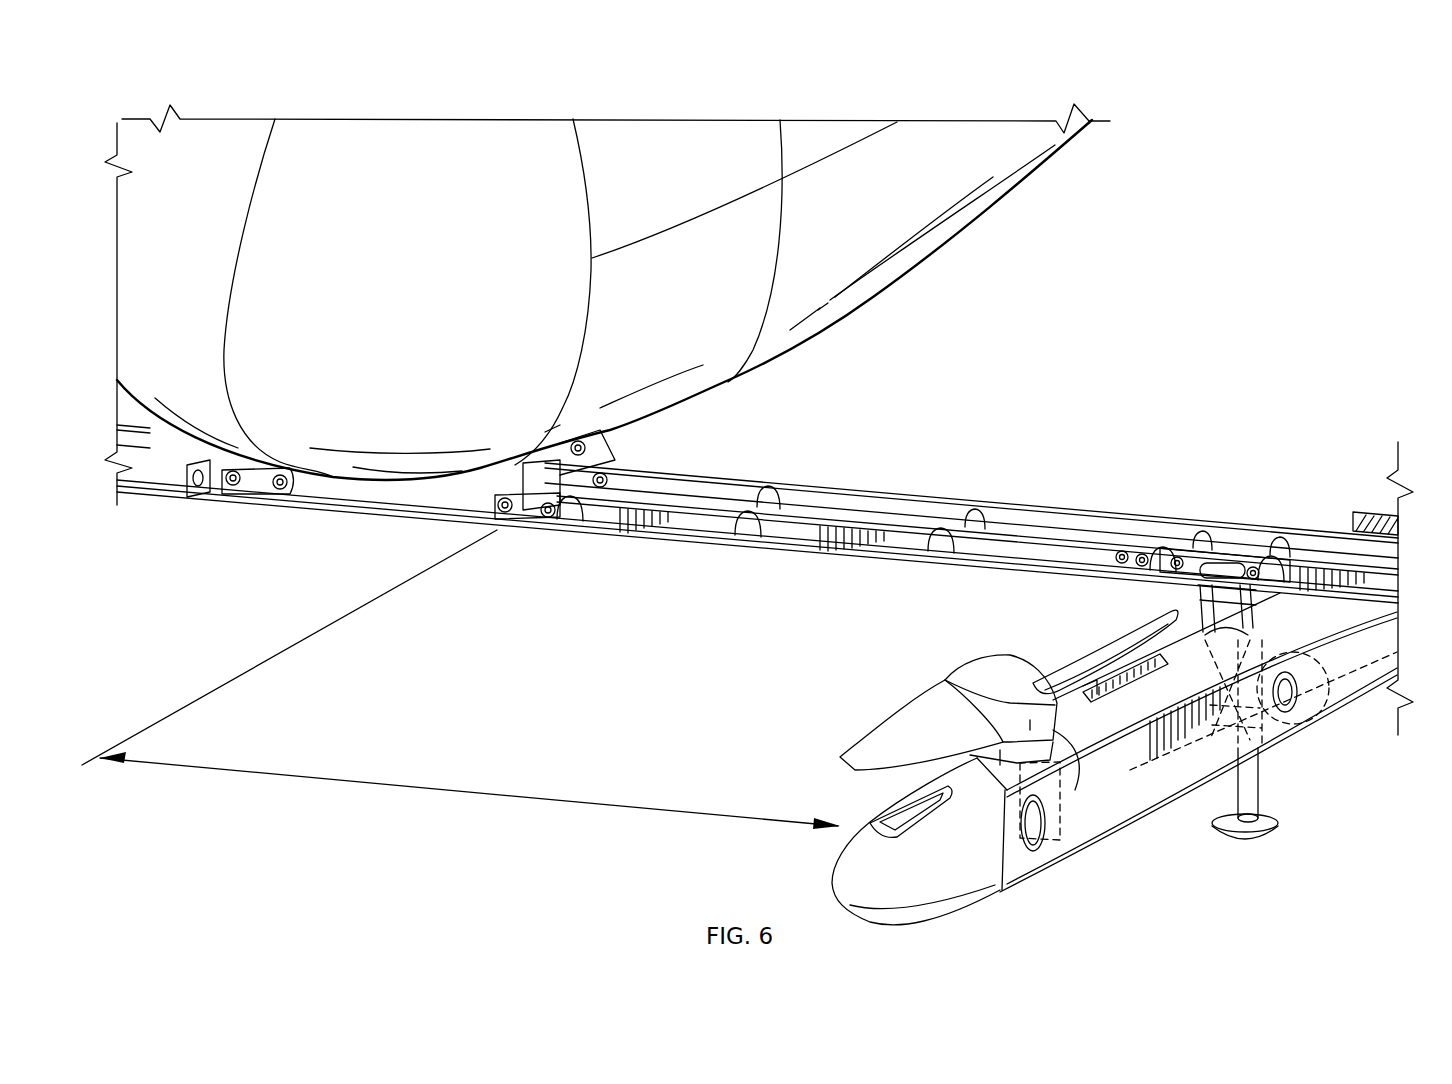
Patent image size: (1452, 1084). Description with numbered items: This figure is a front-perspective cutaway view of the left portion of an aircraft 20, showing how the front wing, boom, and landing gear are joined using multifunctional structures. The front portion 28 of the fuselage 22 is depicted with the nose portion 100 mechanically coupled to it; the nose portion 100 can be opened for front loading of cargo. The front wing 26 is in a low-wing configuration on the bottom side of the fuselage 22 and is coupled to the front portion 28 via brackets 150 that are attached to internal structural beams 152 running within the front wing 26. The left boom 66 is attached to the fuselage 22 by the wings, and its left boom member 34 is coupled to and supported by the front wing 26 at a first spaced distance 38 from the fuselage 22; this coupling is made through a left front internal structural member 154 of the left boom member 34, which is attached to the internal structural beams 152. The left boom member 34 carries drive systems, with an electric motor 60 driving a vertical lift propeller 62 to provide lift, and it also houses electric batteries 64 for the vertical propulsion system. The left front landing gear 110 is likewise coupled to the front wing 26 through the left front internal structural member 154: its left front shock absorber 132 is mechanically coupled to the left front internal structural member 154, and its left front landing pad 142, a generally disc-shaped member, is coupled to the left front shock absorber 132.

The aircraft 20 is at (1230, 110).
The fuselage 22 is at (812, 352).
The front wing 26 is at (964, 497).
The front portion 28 is at (664, 397).
The left boom member 34 is at (1052, 888).
The first spaced distance 38 is at (475, 790).
The electric motor 60 is at (1087, 720).
The vertical lift propeller 62 is at (902, 717).
The electric batteries 64 is at (1105, 803).
The left boom 66 is at (1168, 832).
The nose portion 100 is at (410, 276).
The left front landing gear 110 is at (1268, 794).
The left front shock absorber 132 is at (1280, 753).
The left front landing pad 142 is at (1250, 843).
The brackets 150 is at (263, 473).
The internal structural beams 152 is at (860, 486).
The left front internal structural member 154 is at (1190, 560).